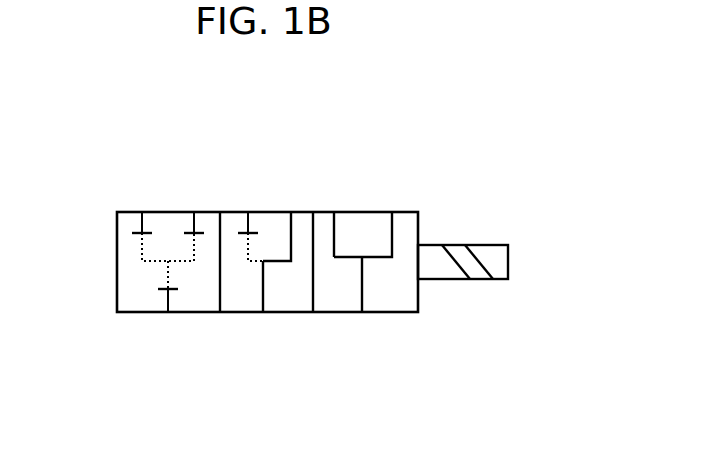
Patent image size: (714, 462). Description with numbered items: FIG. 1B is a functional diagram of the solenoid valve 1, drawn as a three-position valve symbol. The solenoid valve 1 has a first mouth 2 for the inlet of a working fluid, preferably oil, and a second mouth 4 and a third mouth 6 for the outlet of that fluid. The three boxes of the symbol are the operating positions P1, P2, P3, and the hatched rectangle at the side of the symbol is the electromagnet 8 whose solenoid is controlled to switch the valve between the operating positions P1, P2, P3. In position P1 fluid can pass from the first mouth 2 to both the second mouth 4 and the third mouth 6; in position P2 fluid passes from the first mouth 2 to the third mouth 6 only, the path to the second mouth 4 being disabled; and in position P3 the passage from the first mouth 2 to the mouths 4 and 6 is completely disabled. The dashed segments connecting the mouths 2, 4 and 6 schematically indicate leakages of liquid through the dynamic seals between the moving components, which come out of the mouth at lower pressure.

The solenoid valve 1 is at (488, 207).
The first mouth 2 is at (169, 312).
The second mouth 4 is at (142, 212).
The third mouth 6 is at (194, 212).
The electromagnet 8 is at (463, 280).
The first operating position P1 is at (392, 312).
The second operating position P2 is at (245, 312).
The third operating position P3 is at (133, 312).